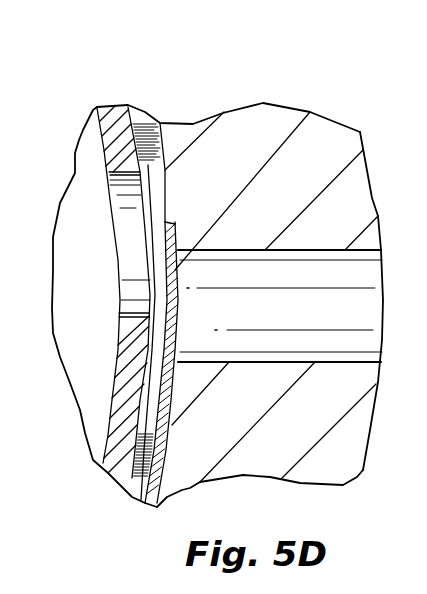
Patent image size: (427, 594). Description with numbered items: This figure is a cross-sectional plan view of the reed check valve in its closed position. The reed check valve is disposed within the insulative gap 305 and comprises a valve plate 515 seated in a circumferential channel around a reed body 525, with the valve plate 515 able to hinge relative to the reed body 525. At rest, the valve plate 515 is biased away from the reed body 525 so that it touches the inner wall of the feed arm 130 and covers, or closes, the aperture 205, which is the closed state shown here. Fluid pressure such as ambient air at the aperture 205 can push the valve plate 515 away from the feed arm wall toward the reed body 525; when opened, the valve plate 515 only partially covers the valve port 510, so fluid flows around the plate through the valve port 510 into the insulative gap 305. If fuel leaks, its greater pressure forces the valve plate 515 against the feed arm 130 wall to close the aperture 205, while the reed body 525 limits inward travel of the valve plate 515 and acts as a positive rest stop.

The feed arm 130 is at (303, 140).
The aperture 205 is at (388, 279).
The insulative gap 305 is at (76, 178).
The valve port 510 is at (125, 227).
The valve plate 515 is at (176, 265).
The reed body 525 is at (110, 118).